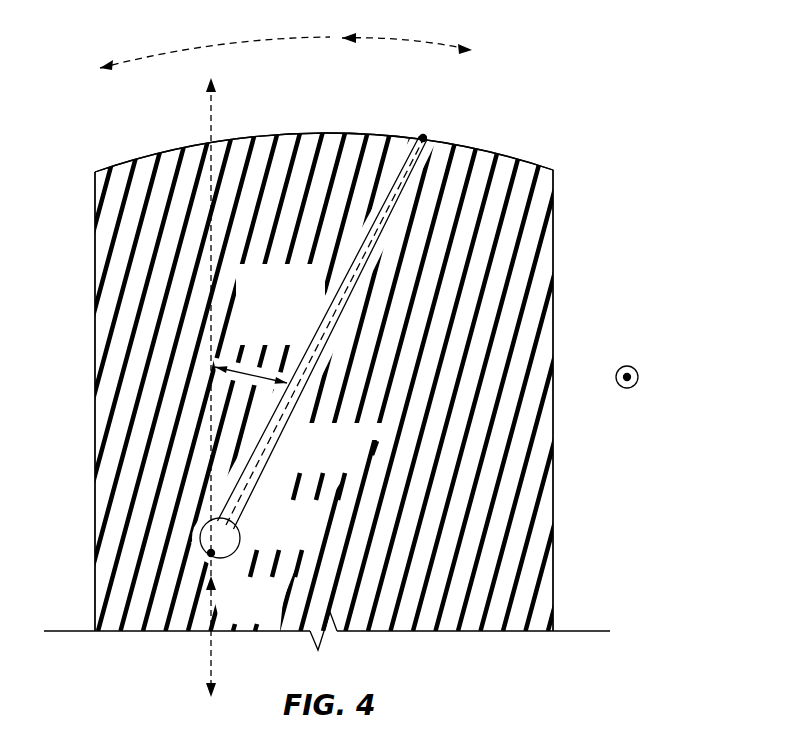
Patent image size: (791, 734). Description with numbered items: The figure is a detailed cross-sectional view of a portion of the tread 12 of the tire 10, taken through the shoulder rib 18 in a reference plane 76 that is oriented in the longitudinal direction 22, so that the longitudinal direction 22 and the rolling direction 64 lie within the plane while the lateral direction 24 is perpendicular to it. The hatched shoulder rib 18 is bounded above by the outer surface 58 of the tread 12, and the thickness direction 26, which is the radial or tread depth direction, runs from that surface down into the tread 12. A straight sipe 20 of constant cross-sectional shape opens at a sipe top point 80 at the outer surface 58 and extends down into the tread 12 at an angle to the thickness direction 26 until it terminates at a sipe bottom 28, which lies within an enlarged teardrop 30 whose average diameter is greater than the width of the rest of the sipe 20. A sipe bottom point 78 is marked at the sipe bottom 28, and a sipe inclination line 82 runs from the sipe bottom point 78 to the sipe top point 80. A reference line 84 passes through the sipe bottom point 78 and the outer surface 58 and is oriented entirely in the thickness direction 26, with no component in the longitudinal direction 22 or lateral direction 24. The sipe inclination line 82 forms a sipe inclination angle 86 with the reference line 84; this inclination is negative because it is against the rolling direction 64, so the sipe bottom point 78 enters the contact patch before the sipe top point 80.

The tire 10 is at (502, 171).
The tread 12 is at (550, 237).
The shoulder rib 18 is at (545, 262).
The sipe 20 is at (328, 308).
The longitudinal direction 22 is at (402, 42).
The lateral direction 24 is at (628, 365).
The thickness direction 26 is at (209, 648).
The sipe bottom 28 is at (209, 555).
The teardrop 30 is at (220, 553).
The outer surface 58 is at (304, 125).
The rolling direction 64 is at (203, 46).
The reference plane 76 is at (100, 545).
The sipe bottom point 78 is at (241, 531).
The sipe top point 80 is at (424, 136).
The sipe inclination line 82 is at (284, 421).
The reference line 84 is at (208, 118).
The sipe inclination angle 86 is at (242, 370).